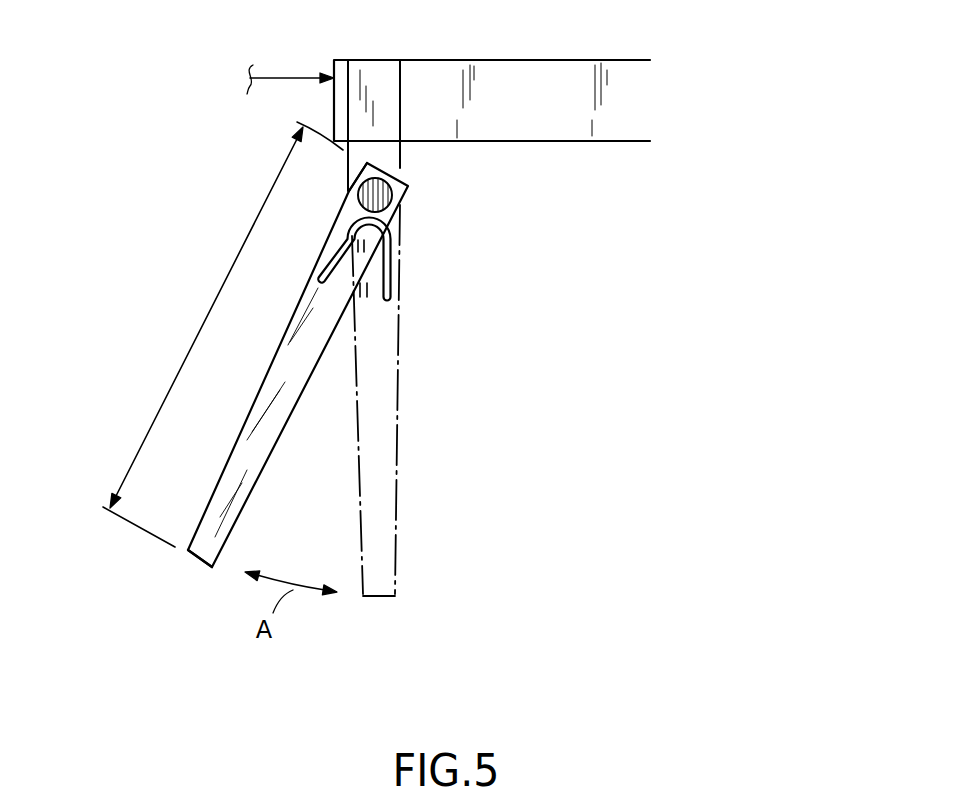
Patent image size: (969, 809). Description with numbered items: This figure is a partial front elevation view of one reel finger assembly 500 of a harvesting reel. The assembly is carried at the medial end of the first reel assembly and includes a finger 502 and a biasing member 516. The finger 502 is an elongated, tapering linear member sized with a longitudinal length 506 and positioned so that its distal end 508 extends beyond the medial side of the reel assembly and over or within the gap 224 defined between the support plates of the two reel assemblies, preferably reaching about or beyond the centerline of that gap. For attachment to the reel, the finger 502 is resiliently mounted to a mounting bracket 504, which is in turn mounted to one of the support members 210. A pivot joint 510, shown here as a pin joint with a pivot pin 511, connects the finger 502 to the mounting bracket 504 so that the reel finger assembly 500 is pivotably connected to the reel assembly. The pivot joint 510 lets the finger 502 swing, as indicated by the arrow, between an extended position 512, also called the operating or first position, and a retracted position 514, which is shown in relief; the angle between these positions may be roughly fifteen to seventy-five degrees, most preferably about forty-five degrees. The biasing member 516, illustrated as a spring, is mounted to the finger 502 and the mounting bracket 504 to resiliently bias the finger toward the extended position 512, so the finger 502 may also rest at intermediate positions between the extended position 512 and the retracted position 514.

The support member 210 is at (552, 60).
The gap 224 is at (278, 78).
The reel finger assembly 500 is at (106, 238).
The finger 502 is at (235, 365).
The mounting bracket 504 is at (400, 82).
The longitudinal length 506 is at (140, 452).
The distal end 508 is at (200, 562).
The pivot joint 510 is at (420, 197).
The pivot pin 511 is at (343, 190).
The extended position 512 is at (228, 462).
The retracted position 514 is at (398, 415).
The biasing member 516 is at (395, 272).